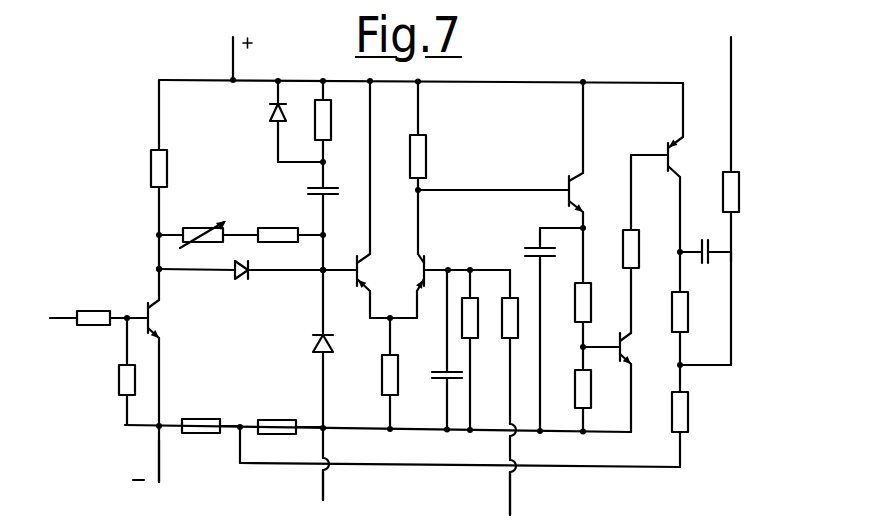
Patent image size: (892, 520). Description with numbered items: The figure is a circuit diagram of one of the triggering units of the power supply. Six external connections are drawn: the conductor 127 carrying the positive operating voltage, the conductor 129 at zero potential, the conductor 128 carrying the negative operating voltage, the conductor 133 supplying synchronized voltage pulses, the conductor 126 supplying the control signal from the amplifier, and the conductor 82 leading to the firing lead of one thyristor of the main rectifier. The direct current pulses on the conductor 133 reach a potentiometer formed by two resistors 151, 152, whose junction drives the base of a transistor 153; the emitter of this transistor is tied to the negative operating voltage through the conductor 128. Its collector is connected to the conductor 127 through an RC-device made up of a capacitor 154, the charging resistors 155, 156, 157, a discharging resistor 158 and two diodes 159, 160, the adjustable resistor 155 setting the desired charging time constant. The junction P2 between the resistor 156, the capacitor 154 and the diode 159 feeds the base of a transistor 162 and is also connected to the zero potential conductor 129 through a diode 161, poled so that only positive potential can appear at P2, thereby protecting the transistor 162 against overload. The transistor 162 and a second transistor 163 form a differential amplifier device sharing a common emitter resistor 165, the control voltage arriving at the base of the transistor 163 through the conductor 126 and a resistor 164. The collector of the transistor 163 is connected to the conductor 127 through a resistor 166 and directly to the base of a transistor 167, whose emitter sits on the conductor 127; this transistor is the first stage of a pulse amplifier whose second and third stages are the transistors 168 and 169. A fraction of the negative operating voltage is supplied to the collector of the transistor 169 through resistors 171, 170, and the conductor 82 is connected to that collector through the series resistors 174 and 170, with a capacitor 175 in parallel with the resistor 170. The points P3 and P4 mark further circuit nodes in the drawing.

The conductor 82 is at (728, 58).
The conductor 126 is at (500, 486).
The conductor 127 is at (228, 52).
The conductor 128 is at (123, 458).
The conductor 129 is at (317, 491).
The conductor 133 is at (63, 303).
The resistor 151 is at (105, 326).
The resistor 152 is at (117, 382).
The transistor 153 is at (157, 319).
The capacitor 154 is at (311, 187).
The charging resistor 155 is at (197, 224).
The charging resistor 156 is at (280, 232).
The charging resistor 157 is at (314, 101).
The discharging resistor 158 is at (150, 168).
The diode 159 is at (233, 273).
The diode 160 is at (274, 123).
The diode 161 is at (310, 347).
The transistor 162 is at (356, 274).
The transistor 163 is at (441, 247).
The resistor 164 is at (506, 300).
The common emitter resistor 165 is at (383, 376).
The resistor 166 is at (427, 156).
The transistor 167 is at (566, 184).
The transistor 168 is at (622, 347).
The transistor 169 is at (665, 147).
The resistor 170 is at (684, 320).
The resistor 171 is at (684, 406).
The series resistor 174 is at (740, 192).
The capacitor 175 is at (712, 246).
The junction P2 is at (318, 276).
The circuit point P3 is at (156, 268).
The circuit point P4 is at (732, 257).